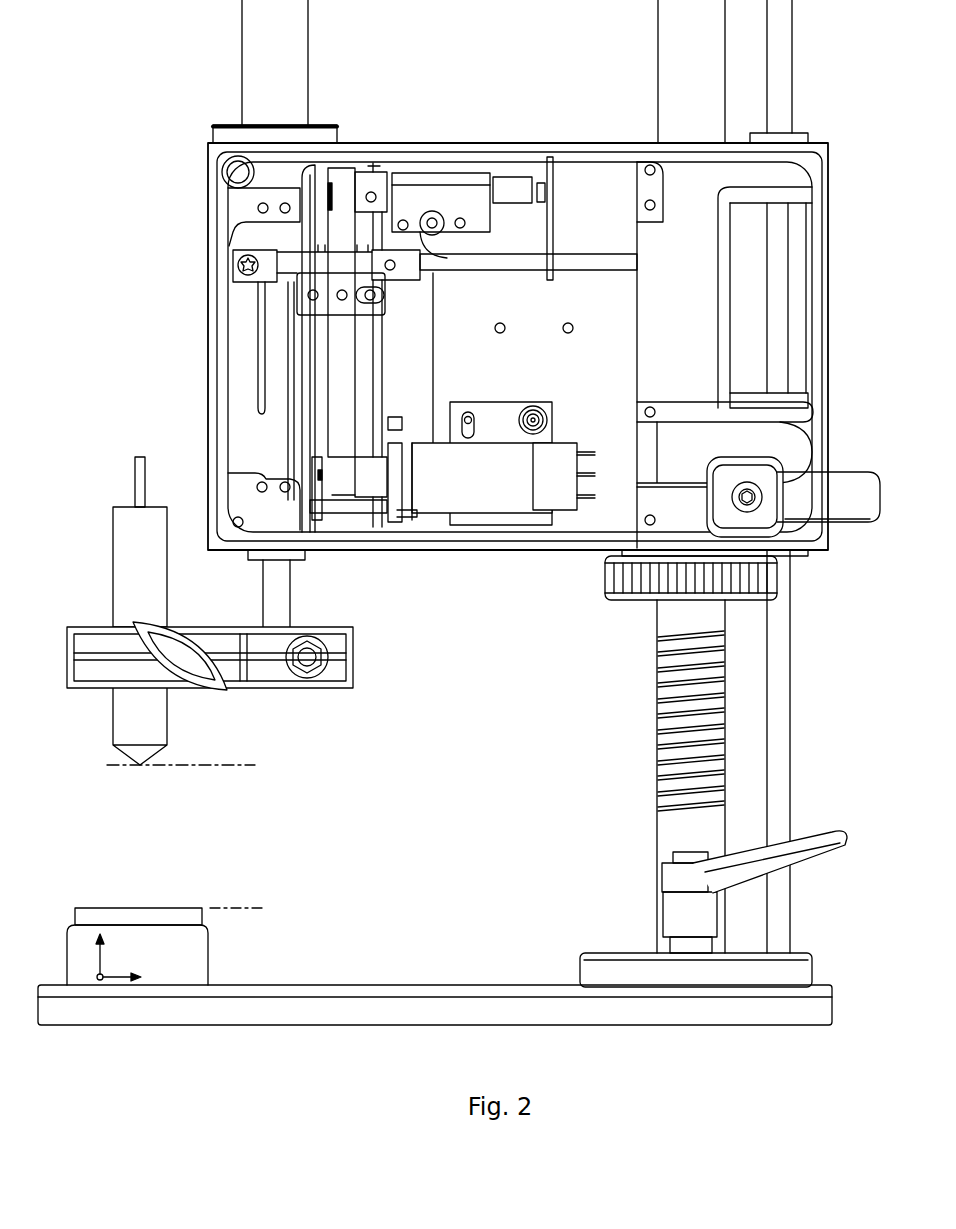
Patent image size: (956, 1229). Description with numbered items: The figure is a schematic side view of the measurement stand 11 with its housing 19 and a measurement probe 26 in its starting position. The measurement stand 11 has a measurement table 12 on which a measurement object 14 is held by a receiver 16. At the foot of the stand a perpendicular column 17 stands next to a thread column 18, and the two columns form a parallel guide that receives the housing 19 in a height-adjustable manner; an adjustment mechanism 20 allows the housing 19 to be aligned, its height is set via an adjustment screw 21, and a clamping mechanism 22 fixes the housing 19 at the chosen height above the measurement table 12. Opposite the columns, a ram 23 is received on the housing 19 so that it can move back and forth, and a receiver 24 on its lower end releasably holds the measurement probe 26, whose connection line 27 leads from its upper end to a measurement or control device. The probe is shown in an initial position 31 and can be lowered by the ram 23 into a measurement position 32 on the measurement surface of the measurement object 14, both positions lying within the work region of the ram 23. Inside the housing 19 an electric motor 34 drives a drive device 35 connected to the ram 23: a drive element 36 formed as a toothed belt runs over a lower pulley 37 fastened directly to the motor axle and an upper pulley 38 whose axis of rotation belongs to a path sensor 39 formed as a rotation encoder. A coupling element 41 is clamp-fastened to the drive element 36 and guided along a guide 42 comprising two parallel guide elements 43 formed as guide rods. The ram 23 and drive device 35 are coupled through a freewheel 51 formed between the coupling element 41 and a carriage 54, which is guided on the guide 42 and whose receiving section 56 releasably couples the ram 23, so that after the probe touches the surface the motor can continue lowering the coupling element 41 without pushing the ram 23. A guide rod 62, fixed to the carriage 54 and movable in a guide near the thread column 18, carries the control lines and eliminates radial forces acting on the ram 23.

The measurement stand 11 is at (504, 760).
The measurement table 12 is at (373, 983).
The measurement object 14 is at (152, 910).
The receiver 16 is at (195, 955).
The perpendicular column 17 is at (780, 700).
The thread column 18 is at (660, 822).
The housing 19 is at (459, 122).
The adjustment mechanism 20 is at (617, 935).
The adjustment screw 21 is at (620, 575).
The clamping mechanism 22 is at (853, 548).
The ram 23 is at (277, 600).
The receiver 24 is at (350, 652).
The measurement probe 26 is at (123, 575).
The connection line 27 is at (137, 487).
The initial position 31 is at (232, 766).
The measurement position 32 is at (238, 906).
The electric motor 34 is at (491, 463).
The drive device 35 is at (428, 562).
The drive element 36 is at (355, 150).
The lower pulley 37 is at (365, 482).
The upper pulley 38 is at (372, 165).
The path sensor 39 is at (515, 178).
The coupling element 41 is at (317, 335).
The guide 42 is at (323, 108).
The guide element 43 is at (408, 170).
The freewheel 51 is at (270, 307).
The carriage 54 is at (262, 262).
The receiving section 56 is at (280, 278).
The guide rod 62 is at (597, 262).